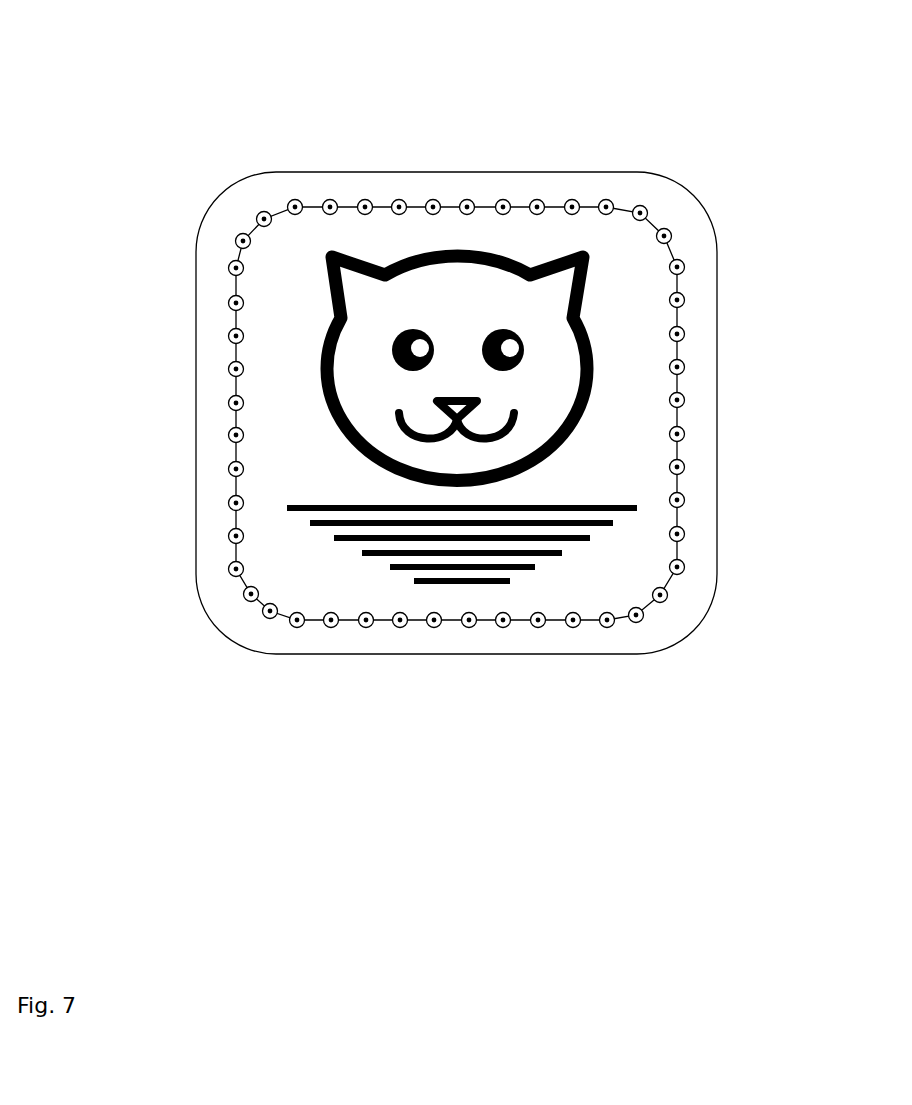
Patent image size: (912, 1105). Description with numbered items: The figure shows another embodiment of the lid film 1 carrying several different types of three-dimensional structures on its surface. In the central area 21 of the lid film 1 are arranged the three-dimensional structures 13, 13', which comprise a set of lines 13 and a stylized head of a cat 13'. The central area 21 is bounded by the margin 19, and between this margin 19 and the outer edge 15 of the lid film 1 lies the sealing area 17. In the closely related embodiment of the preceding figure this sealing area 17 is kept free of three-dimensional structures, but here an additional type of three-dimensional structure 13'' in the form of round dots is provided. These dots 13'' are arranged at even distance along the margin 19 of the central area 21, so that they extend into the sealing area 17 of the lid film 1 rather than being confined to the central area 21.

The lid film 1 is at (536, 97).
The three-dimensional structures 13 is at (440, 617).
The three-dimensional structures 13' is at (334, 395).
The three-dimensional structure in the form of round dots 13'' is at (168, 369).
The edge 15 is at (717, 279).
The sealing area 17 is at (705, 394).
The margin 19 is at (575, 628).
The central area 21 is at (413, 612).